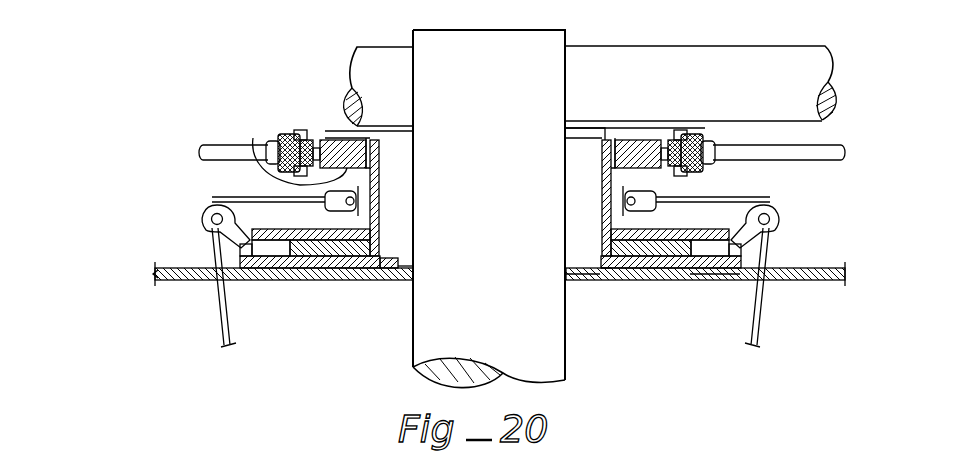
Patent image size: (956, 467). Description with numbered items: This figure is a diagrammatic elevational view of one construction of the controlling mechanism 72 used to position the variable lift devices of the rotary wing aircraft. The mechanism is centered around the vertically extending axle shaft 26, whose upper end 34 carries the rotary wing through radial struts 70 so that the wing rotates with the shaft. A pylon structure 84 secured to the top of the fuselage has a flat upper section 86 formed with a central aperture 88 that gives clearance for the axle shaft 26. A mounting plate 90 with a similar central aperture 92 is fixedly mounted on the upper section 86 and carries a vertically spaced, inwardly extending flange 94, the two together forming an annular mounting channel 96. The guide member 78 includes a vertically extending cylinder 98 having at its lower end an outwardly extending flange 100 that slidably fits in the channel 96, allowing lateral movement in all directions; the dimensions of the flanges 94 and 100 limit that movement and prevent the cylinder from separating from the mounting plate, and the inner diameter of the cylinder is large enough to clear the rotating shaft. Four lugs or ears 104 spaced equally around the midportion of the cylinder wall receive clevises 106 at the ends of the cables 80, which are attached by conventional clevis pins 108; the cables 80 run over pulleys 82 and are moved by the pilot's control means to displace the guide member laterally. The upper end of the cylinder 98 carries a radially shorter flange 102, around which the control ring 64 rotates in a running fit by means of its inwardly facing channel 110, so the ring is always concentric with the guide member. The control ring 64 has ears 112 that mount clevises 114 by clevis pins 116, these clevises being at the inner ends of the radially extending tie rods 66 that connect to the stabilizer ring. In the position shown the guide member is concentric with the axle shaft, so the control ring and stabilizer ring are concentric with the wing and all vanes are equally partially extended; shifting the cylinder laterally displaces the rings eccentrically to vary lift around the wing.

The axle shaft 26 is at (425, 333).
The upper end of the axle shaft 34 is at (418, 37).
The radial struts 70 is at (358, 50).
The tie rods 66 is at (208, 148).
The control ring 64 is at (346, 170).
The inwardly facing channel 110 is at (350, 138).
The ears 112 is at (296, 132).
The clevises 114 is at (272, 140).
The clevis pins 116 is at (270, 158).
The cylinder 98 is at (600, 155).
The flange 102 is at (602, 143).
The clevis pins 108 is at (627, 201).
The lugs or ears 104 is at (622, 210).
The clevises 106 is at (625, 190).
The flat upper section 86 is at (280, 280).
The guide member 78 is at (595, 242).
The flange 94 is at (705, 228).
The controlling mechanism 72 is at (360, 290).
The central aperture 92 is at (397, 262).
The central aperture 88 is at (405, 272).
The pulleys 82 is at (204, 214).
The cables 80 is at (223, 310).
The pylon structure 84 is at (172, 268).
The flange 100 is at (585, 273).
The annular mounting channel 96 is at (697, 277).
The mounting plate 90 is at (605, 275).